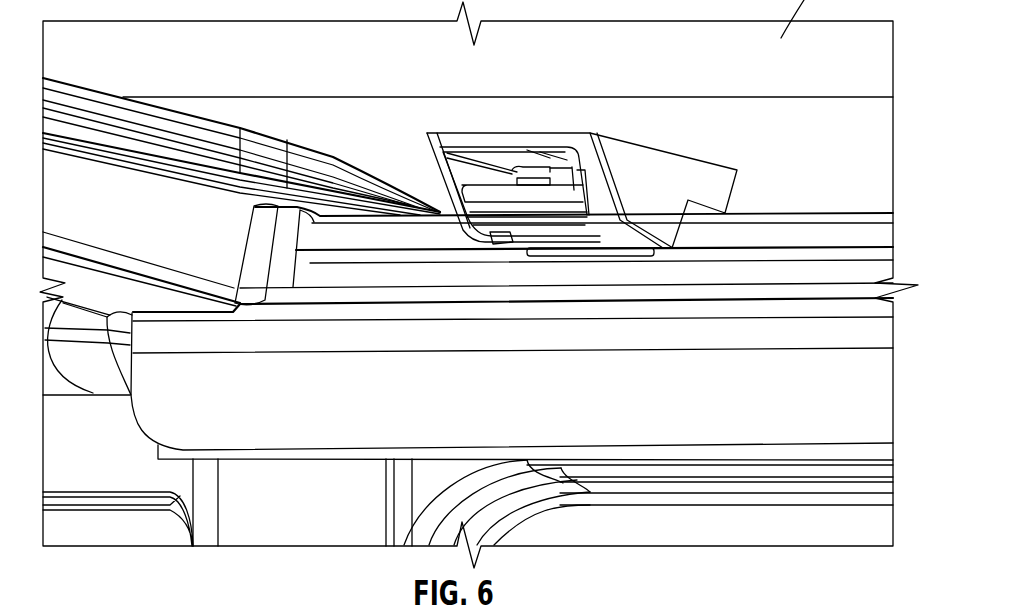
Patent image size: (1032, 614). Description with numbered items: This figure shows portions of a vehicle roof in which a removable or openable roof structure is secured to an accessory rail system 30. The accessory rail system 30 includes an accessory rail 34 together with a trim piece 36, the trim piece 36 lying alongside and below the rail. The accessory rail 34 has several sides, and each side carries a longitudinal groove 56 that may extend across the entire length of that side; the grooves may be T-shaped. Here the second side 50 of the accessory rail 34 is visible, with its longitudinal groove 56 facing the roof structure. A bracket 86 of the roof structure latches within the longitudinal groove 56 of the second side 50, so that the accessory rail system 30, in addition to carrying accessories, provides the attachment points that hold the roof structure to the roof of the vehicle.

The accessory rail system 30 is at (855, 288).
The accessory rail 34 is at (838, 225).
The trim piece 36 is at (870, 407).
The second side 50 is at (788, 233).
The longitudinal groove 56 is at (741, 253).
The bracket 86 is at (677, 163).